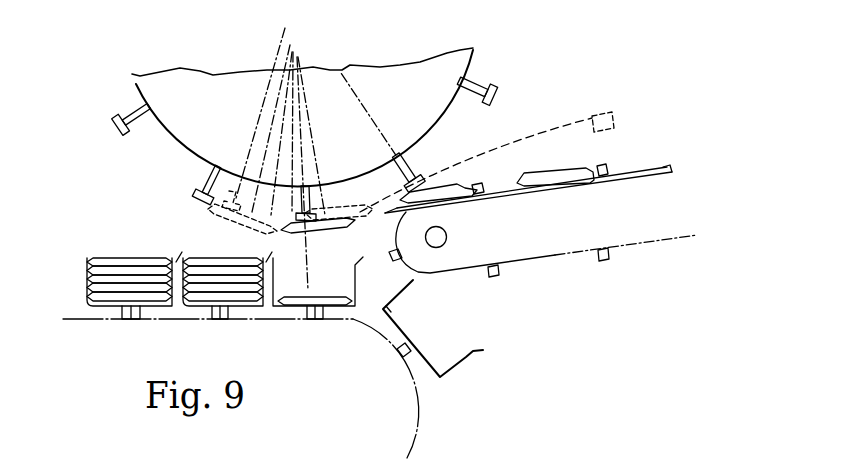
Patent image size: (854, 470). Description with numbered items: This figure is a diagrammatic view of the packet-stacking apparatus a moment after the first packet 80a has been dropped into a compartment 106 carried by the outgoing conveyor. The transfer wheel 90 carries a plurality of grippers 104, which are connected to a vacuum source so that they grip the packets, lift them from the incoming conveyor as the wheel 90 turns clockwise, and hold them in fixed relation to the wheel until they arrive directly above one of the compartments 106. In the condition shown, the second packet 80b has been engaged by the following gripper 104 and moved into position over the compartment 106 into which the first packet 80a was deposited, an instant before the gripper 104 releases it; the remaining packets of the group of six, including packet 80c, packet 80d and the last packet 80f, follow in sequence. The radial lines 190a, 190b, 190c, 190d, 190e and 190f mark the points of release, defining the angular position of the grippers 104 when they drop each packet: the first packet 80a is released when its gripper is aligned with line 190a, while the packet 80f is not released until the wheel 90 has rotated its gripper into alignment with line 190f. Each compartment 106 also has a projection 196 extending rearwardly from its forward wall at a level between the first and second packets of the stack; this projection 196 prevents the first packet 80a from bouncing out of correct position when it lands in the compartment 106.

The transfer wheel 90 is at (134, 84).
The gripper 104 is at (497, 90).
The radial line 190a is at (299, 74).
The radial line 190b is at (306, 167).
The radial line 190c is at (294, 56).
The radial line 190d is at (286, 79).
The radial line 190e is at (283, 52).
The radial line 190f is at (281, 30).
The first packet 80a is at (366, 207).
The second packet 80b is at (341, 227).
The packet 80c is at (452, 195).
The packet 80d is at (568, 182).
The sixth packet 80f is at (210, 209).
The projection 196 is at (181, 294).
The compartment 106 is at (353, 321).